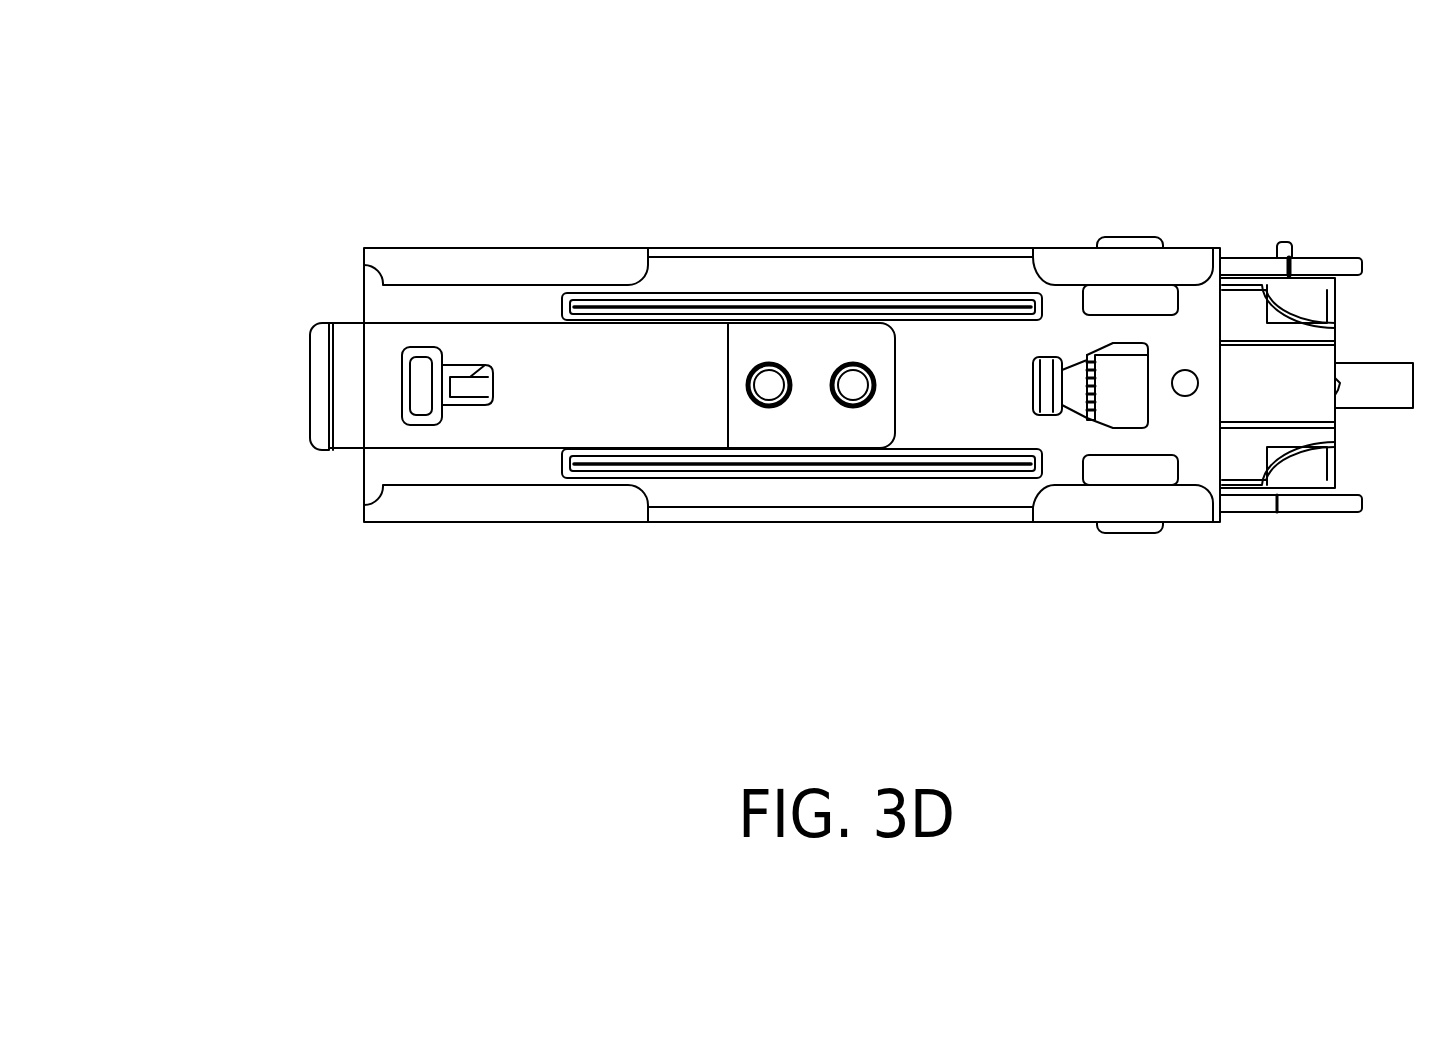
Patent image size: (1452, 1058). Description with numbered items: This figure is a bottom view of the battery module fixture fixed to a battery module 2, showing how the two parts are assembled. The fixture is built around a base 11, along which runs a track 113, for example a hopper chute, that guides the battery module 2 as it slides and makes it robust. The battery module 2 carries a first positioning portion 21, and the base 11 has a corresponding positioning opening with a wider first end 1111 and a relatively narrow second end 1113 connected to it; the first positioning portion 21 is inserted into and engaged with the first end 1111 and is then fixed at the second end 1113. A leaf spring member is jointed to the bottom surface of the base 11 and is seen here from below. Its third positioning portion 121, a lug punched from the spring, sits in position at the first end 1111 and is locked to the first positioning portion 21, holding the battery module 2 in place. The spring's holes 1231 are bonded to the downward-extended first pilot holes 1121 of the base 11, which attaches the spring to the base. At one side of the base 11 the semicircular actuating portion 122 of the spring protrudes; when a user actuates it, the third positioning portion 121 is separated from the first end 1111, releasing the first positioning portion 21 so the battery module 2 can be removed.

The base 11 is at (382, 468).
The first end 1111 is at (1150, 393).
The second end 1113 is at (1066, 370).
The first pilot hole 1121 is at (787, 397).
The track 113 is at (938, 315).
The third positioning portion 121 is at (472, 387).
The actuating portion 122 is at (317, 393).
The hole 1231 is at (750, 402).
The battery module 2 is at (1320, 344).
The first positioning portion 21 is at (421, 378).